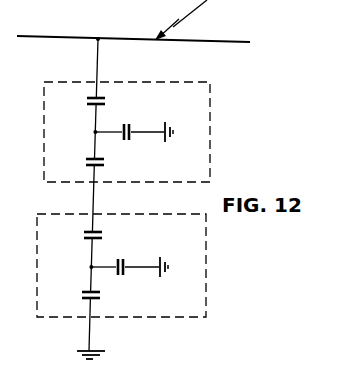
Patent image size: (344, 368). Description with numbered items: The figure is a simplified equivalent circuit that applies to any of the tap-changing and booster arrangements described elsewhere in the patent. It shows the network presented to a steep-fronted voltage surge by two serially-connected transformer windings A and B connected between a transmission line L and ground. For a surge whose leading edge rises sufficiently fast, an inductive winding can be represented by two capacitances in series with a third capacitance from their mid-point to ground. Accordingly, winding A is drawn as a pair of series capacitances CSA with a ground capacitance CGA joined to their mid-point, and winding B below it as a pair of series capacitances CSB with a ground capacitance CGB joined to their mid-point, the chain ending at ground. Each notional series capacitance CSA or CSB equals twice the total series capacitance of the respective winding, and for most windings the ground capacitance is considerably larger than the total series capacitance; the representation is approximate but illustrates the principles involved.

The transmission line L is at (51, 36).
The transformer winding A is at (207, 123).
The transformer winding B is at (202, 273).
The series capacitance CSA is at (79, 134).
The ground capacitance CGA is at (133, 143).
The series capacitance CSB is at (73, 266).
The ground capacitance CGB is at (128, 277).